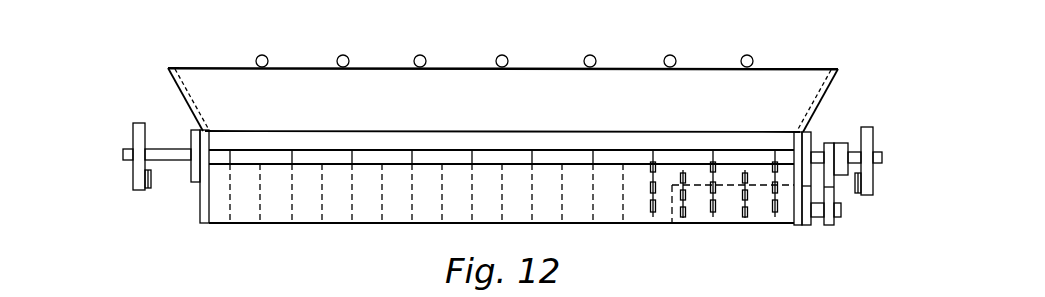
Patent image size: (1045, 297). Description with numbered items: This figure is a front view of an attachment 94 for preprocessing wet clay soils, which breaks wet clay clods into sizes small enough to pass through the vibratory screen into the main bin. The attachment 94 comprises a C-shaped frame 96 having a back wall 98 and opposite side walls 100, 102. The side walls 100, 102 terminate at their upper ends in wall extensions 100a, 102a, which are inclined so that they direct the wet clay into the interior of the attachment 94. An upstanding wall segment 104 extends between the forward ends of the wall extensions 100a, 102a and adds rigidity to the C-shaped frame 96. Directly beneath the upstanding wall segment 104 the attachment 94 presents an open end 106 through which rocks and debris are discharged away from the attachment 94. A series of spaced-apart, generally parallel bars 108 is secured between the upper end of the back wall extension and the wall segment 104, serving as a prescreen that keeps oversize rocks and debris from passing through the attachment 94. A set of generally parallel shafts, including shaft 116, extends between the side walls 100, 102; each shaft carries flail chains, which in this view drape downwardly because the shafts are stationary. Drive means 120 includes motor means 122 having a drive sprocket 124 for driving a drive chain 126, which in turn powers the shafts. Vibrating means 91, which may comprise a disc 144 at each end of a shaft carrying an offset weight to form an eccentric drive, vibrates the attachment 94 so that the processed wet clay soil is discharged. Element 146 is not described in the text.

The vibrating means 91 is at (120, 173).
The attachment 94 is at (845, 61).
The C-shaped frame 96 is at (196, 225).
The back wall 98 is at (428, 214).
The side wall 100 is at (210, 143).
The wall extension 100a is at (173, 73).
The side wall 102 is at (795, 144).
The wall extension 102a is at (822, 100).
The upstanding wall segment 104 is at (767, 80).
The open end 106 is at (278, 210).
The bars 108 is at (747, 55).
The shaft 116 is at (376, 146).
The drive means 120 is at (829, 240).
The motor means 122 is at (697, 227).
The drive sprocket 124 is at (836, 222).
The drive chain 126 is at (820, 225).
The disc 144 is at (133, 133).
The retainer 146 is at (152, 182).